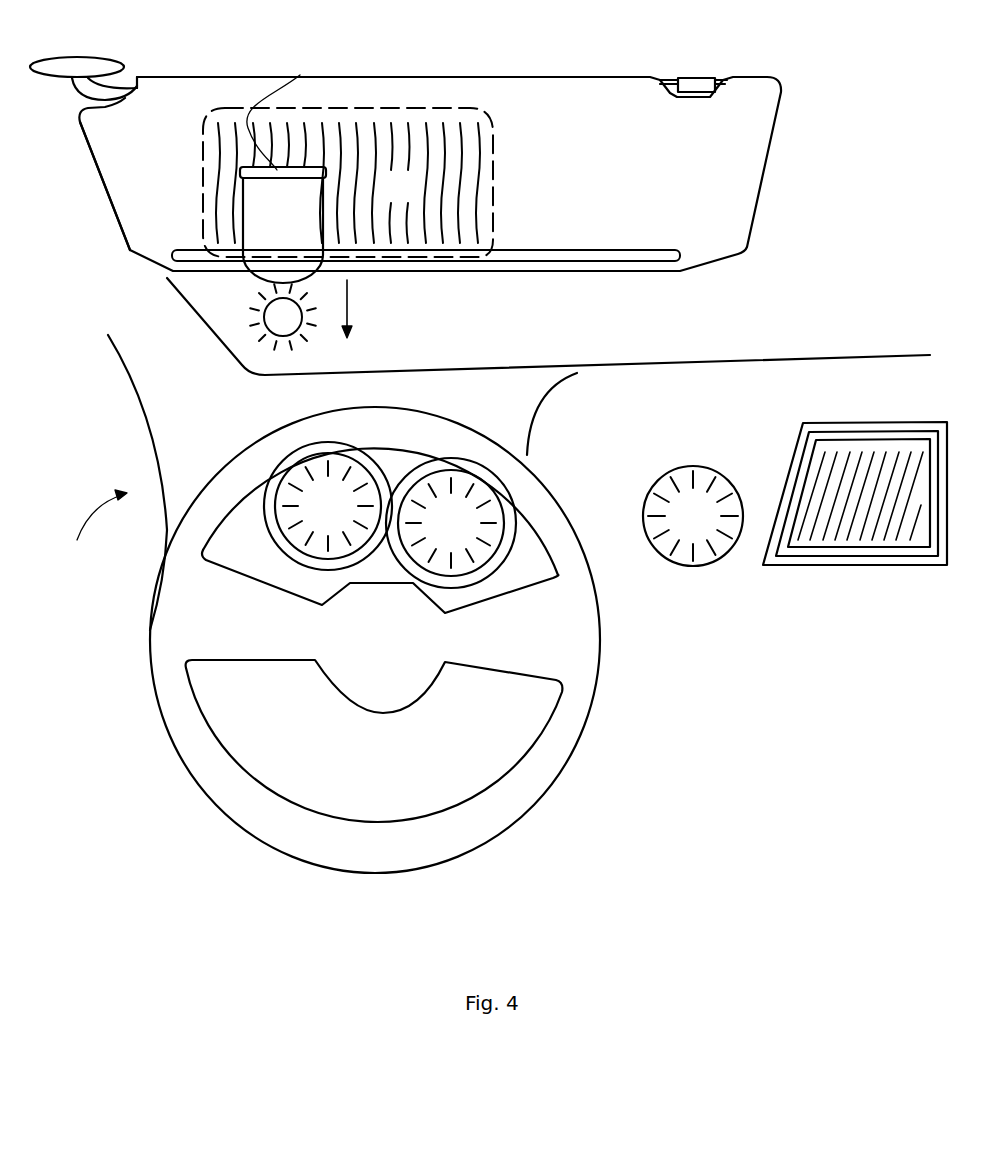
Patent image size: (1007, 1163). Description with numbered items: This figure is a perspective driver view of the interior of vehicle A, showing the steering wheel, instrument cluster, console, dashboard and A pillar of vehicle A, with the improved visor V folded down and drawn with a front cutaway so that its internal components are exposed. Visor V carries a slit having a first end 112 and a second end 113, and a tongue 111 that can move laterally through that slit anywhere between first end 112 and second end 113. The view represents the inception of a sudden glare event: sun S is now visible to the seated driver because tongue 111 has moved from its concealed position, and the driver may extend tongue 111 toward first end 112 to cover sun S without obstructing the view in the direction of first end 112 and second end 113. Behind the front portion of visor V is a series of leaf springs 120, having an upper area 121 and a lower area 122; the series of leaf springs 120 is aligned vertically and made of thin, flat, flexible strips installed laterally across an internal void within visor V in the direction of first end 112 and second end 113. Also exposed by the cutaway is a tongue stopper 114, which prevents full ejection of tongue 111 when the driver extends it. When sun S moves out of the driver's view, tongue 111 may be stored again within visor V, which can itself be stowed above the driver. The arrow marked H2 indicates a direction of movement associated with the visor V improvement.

The tongue 111 is at (257, 263).
The first end 112 is at (130, 250).
The second end 113 is at (678, 256).
The tongue stopper 114 is at (281, 112).
The series of leaf springs 120 is at (348, 182).
The upper area 121 is at (480, 137).
The lower area 122 is at (480, 217).
The visor V is at (737, 197).
The sun S is at (283, 317).
The height H2 is at (347, 317).
The vehicle A is at (99, 531).